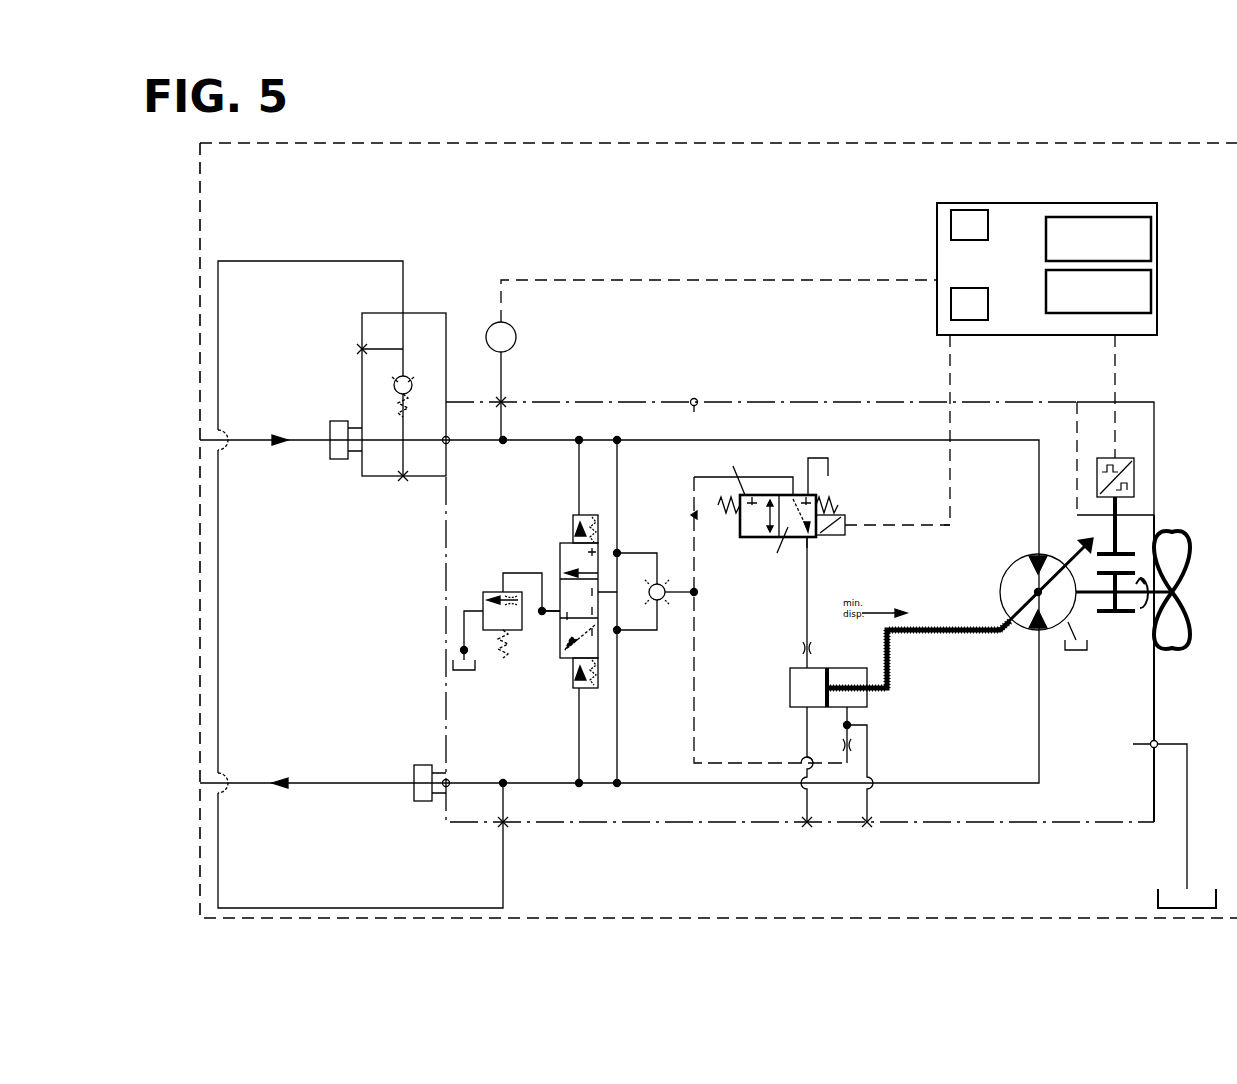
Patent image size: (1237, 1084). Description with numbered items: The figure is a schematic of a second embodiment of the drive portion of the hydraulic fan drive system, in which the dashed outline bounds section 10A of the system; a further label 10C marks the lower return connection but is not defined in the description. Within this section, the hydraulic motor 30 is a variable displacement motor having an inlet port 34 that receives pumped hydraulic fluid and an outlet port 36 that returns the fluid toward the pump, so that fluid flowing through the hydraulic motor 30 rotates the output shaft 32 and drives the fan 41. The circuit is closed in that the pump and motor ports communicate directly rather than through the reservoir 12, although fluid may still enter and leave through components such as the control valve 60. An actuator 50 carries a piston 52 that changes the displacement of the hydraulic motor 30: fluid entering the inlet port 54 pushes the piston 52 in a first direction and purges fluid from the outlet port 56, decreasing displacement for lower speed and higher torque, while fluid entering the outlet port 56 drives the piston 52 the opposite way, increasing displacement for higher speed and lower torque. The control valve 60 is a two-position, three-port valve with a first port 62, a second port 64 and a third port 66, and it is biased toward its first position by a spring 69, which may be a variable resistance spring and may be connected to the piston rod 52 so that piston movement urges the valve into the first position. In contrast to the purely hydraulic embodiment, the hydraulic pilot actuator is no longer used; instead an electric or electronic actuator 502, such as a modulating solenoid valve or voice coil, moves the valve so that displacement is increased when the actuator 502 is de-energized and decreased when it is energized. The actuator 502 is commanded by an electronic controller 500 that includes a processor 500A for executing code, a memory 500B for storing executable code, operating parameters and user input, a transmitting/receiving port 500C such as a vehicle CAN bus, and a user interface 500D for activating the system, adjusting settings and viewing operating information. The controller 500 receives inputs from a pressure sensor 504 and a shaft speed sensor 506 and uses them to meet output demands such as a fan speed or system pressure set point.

The section of the hydraulic fan drive system 10A is at (760, 143).
The hydraulic return line 10C is at (200, 783).
The reservoir 12 is at (837, 472).
The hydraulic motor 30 is at (1002, 573).
The output shaft 32 is at (1158, 600).
The inlet port 34 is at (1040, 562).
The outlet port 36 is at (1040, 627).
The fan 41 is at (1162, 647).
The actuator 50 is at (788, 680).
The piston 52 is at (852, 688).
The inlet port 54 is at (805, 668).
The outlet port 56 is at (843, 707).
The control valve 60 is at (752, 540).
The first port 62 is at (793, 505).
The second port 64 is at (808, 495).
The third port 66 is at (807, 537).
The spring 69 is at (727, 497).
The electronic controller 500 is at (937, 252).
The processor 500A is at (1046, 245).
The memory 500B is at (1046, 292).
The transmitting/receiving port 500C is at (967, 210).
The user interface 500D is at (980, 288).
The electric or electronic actuator 502 is at (840, 533).
The pressure sensor 504 is at (515, 330).
The shaft speed sensor 506 is at (1135, 477).